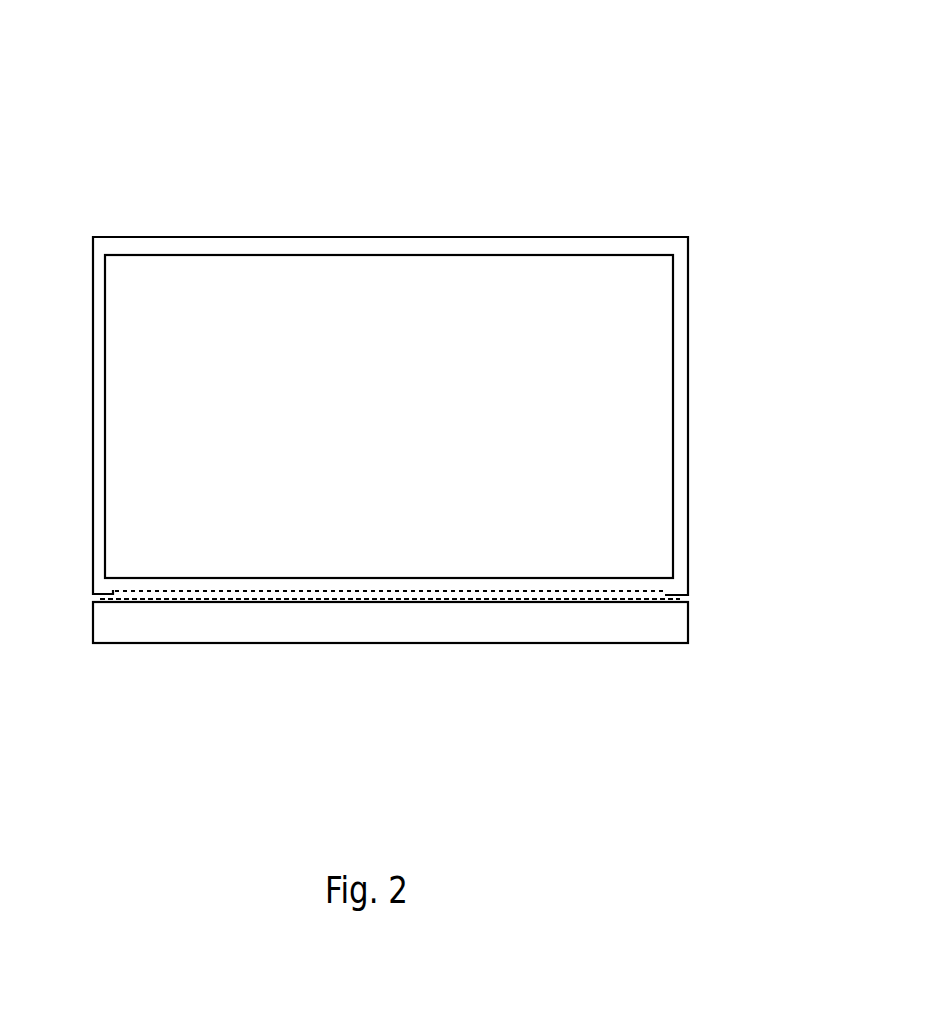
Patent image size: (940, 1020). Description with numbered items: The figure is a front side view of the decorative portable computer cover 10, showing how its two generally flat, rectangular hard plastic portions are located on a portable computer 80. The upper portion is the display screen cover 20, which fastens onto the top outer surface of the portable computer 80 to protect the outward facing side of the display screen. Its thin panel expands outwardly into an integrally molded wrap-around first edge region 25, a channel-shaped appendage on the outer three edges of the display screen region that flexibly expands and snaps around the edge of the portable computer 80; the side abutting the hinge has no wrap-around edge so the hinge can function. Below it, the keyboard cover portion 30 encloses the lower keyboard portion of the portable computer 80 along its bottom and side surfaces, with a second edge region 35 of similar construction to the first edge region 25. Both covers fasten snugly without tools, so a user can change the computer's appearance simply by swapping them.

The portable computer cover 10 is at (840, 198).
The display screen cover 20 is at (735, 545).
The first edge region 25 is at (689, 405).
The portable computer 80 is at (324, 300).
The keyboard cover portion 30 is at (617, 678).
The second edge region 35 is at (673, 641).